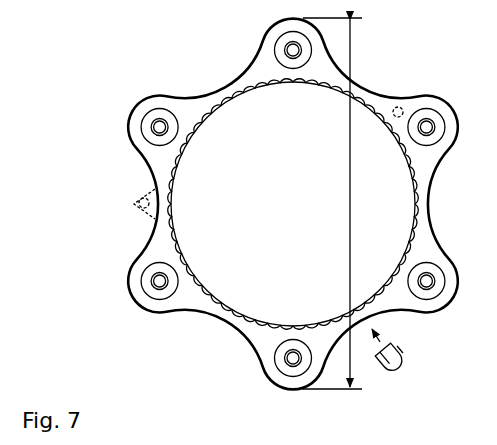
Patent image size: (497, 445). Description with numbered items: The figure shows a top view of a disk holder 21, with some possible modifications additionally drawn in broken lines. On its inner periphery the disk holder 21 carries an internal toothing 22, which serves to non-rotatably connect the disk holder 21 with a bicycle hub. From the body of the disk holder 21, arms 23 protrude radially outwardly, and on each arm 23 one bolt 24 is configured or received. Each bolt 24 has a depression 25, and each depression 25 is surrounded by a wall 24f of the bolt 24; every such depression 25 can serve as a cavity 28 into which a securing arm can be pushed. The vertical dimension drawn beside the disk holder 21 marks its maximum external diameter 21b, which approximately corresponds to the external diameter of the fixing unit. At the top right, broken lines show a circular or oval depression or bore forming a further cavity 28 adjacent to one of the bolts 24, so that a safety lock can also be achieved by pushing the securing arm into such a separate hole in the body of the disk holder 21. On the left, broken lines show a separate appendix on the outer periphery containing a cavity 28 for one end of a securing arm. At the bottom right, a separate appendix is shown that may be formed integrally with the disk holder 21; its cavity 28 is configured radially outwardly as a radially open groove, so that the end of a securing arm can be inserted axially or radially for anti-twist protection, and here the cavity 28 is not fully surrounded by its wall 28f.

The disk holder 21 is at (146, 77).
The maximum external diameter 21b is at (351, 56).
The internal toothing 22 is at (216, 297).
The arm 23 is at (266, 54).
The bolt 24 is at (429, 148).
The wall 24f is at (428, 116).
The depression 25 is at (158, 283).
The cavity 28 is at (398, 106).
The wall 28f is at (403, 356).